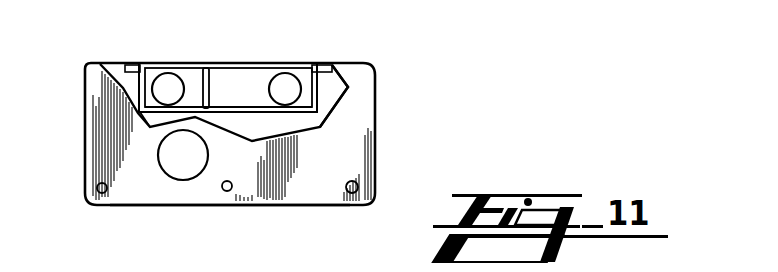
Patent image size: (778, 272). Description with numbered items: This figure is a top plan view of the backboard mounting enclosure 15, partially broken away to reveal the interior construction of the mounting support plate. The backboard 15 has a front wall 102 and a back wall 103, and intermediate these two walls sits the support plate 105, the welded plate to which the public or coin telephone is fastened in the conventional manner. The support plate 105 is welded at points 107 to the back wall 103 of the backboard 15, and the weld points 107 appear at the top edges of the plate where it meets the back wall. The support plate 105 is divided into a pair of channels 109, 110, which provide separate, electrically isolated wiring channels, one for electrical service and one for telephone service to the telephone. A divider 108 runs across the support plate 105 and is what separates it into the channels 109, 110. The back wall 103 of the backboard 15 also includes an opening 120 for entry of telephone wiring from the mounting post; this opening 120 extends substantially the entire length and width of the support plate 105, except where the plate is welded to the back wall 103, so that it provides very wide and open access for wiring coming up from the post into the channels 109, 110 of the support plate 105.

The backboard mounting enclosure 15 is at (358, 163).
The front wall 102 is at (262, 205).
The back wall 103 is at (348, 63).
The support plate 105 is at (322, 87).
The weld points 107 is at (130, 63).
The divider 108 is at (210, 92).
The channel 109 is at (195, 82).
The channel 110 is at (251, 86).
The opening 120 is at (166, 90).